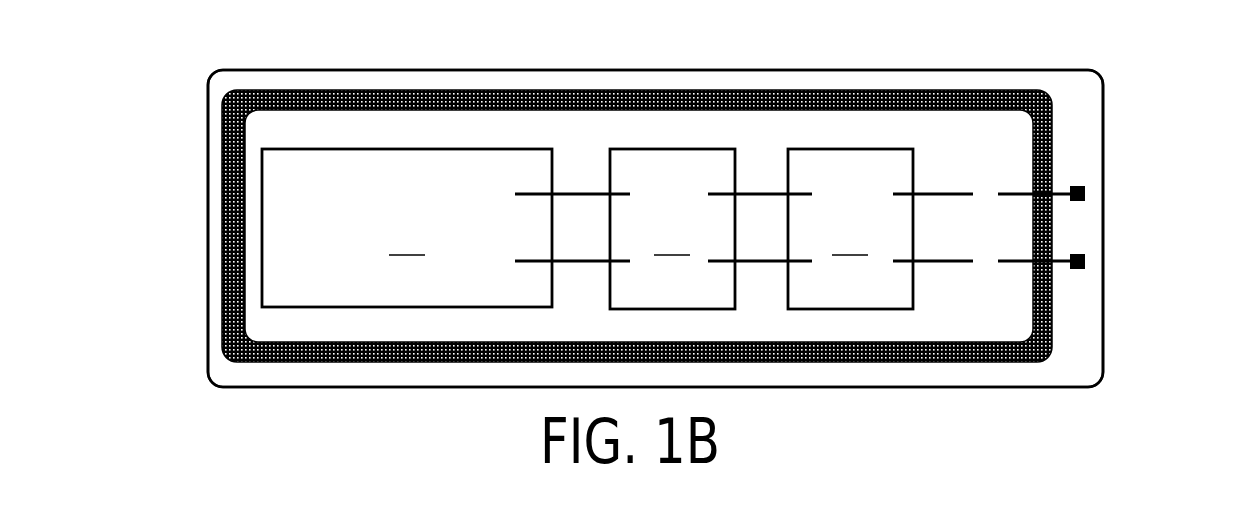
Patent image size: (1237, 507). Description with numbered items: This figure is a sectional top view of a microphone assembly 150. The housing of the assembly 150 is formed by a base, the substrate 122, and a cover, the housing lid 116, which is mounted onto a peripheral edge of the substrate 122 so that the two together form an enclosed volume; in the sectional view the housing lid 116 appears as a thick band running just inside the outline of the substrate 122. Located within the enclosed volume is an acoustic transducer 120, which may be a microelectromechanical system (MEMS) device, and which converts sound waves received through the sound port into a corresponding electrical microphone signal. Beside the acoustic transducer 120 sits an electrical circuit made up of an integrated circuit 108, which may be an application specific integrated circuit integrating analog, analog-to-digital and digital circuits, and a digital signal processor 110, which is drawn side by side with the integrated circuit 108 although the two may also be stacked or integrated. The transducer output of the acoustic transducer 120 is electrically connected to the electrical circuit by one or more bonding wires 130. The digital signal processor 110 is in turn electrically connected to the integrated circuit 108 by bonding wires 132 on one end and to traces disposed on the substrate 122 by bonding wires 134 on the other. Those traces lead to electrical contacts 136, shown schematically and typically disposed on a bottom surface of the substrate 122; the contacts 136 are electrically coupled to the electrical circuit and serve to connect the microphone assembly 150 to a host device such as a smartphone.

The microphone assembly 150 is at (227, 43).
The substrate 122 is at (1063, 95).
The housing lid 116 is at (913, 90).
The acoustic transducer 120 is at (407, 228).
The integrated circuit 108 is at (672, 229).
The digital signal processor 110 is at (850, 229).
The bonding wires 130 is at (569, 192).
The bonding wires 132 is at (760, 192).
The bonding wires 134 is at (946, 192).
The contacts 136 is at (1092, 191).